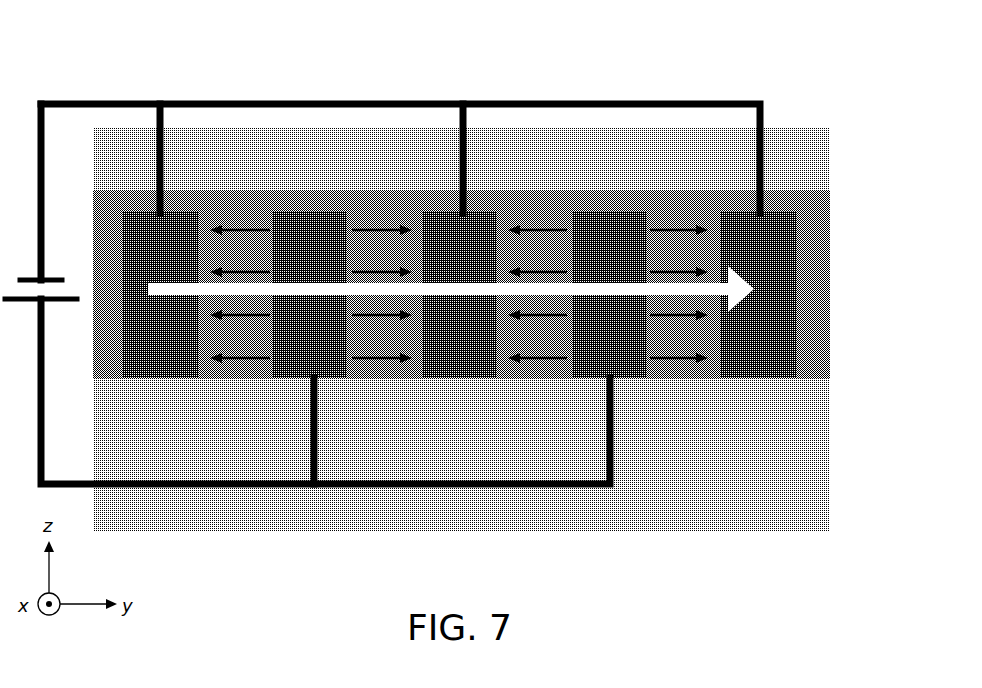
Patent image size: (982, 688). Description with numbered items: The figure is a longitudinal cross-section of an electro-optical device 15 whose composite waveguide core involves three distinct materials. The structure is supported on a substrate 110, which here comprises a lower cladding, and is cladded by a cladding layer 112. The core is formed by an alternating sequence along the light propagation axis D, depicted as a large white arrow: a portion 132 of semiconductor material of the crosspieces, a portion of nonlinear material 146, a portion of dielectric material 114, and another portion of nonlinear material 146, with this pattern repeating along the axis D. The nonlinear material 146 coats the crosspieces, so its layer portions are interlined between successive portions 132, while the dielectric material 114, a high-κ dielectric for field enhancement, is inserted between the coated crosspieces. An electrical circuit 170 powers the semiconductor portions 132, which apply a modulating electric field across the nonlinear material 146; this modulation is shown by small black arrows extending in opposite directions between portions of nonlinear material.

The electro-optical device 15 is at (812, 572).
The substrate 110 is at (817, 447).
The cladding layer 112 is at (818, 146).
The dielectric material 114 is at (383, 194).
The portions of the crosspieces 132 is at (137, 205).
The nonlinear material 146 is at (818, 302).
The electrical circuit 170 is at (260, 100).
The direction of light propagation D is at (592, 300).